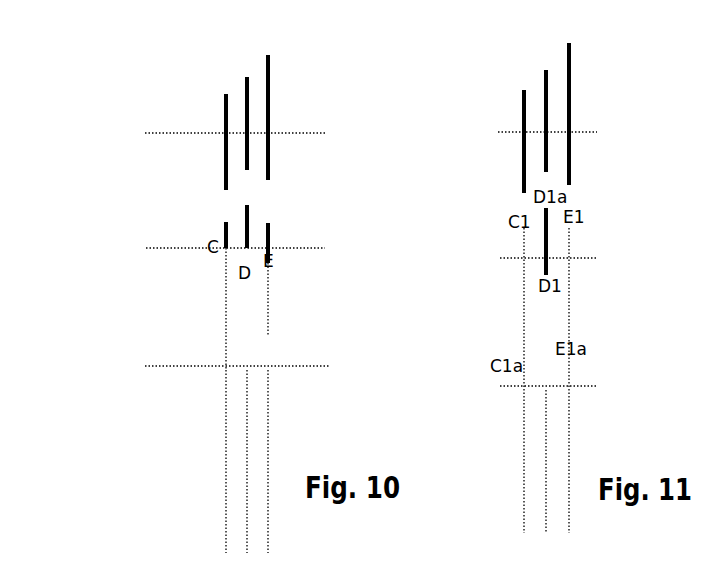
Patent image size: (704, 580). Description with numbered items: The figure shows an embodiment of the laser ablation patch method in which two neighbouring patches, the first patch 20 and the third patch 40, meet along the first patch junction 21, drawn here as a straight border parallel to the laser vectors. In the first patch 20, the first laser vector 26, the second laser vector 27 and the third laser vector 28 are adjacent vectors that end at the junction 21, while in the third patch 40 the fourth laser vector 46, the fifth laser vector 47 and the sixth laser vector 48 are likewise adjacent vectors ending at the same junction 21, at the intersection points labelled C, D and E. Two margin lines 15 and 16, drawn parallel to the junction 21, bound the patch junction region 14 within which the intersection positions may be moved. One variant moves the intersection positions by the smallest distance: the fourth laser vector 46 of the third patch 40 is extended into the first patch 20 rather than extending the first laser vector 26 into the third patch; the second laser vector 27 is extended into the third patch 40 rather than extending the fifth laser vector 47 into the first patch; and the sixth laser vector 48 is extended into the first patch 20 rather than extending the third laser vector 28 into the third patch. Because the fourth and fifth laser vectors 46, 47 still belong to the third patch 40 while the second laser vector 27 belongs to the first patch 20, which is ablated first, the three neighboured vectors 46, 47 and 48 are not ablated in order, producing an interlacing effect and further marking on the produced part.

In FIG. 10, the patch junction region 14 is at (175, 296).
In FIG. 10, the margin line 15 is at (152, 133).
In FIG. 10, the margin line 16 is at (157, 367).
In FIG. 10, the first patch 20 is at (155, 186).
In FIG. 10, the first patch junction 21 is at (160, 245).
In FIG. 10, the first laser vector 26 is at (229, 236).
In FIG. 10, the second laser vector 27 is at (249, 230).
In FIG. 11, the second laser vector 27 is at (545, 217).
In FIG. 10, the third laser vector 28 is at (271, 240).
In FIG. 10, the third patch 40 is at (157, 415).
In FIG. 10, the fourth laser vector 46 is at (226, 272).
In FIG. 11, the fourth laser vector 46 is at (523, 301).
In FIG. 10, the fifth laser vector 47 is at (248, 257).
In FIG. 11, the fifth laser vector 47 is at (545, 262).
In FIG. 10, the sixth laser vector 48 is at (271, 318).
In FIG. 11, the sixth laser vector 48 is at (568, 328).